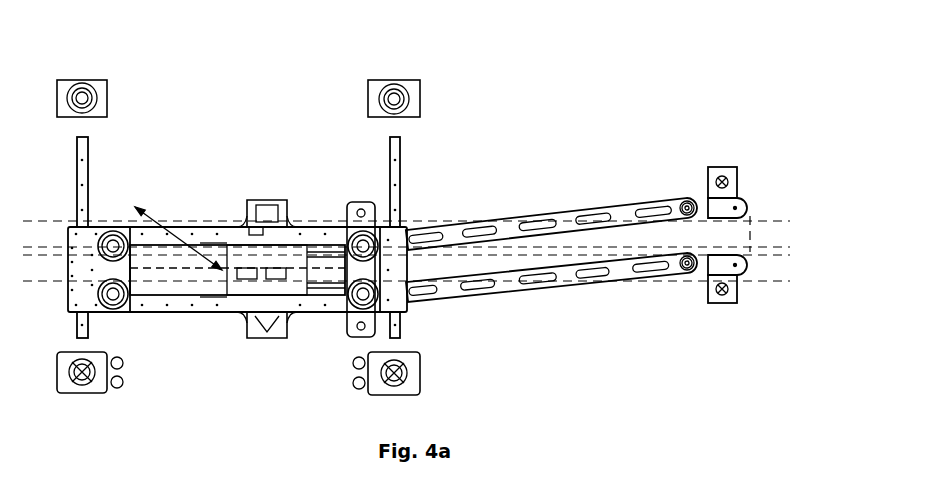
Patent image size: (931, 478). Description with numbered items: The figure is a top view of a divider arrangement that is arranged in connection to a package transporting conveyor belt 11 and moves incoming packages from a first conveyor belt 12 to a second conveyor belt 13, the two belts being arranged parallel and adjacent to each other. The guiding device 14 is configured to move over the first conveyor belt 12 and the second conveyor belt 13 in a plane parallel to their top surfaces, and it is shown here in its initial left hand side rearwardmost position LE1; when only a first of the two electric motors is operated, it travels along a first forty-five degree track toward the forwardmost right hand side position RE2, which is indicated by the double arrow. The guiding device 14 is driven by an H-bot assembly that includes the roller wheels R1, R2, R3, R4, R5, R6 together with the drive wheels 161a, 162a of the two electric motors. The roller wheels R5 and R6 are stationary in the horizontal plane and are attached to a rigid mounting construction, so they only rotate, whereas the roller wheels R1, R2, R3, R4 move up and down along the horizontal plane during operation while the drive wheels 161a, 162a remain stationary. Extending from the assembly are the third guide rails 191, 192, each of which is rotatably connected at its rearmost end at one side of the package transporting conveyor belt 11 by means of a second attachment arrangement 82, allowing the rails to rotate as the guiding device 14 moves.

The roller wheel R1 is at (108, 310).
The roller wheel R2 is at (97, 225).
The roller wheel R3 is at (385, 306).
The roller wheel R4 is at (400, 206).
The roller wheel R5 is at (82, 80).
The roller wheel R6 is at (420, 84).
The forwardmost right hand side position RE2 is at (135, 200).
The left hand side rearwardmost position LE1 is at (222, 245).
The package transporting conveyor belt 11 is at (770, 235).
The first conveyor belt 12 is at (620, 237).
The second conveyor belt 13 is at (463, 263).
The guiding device 14 is at (267, 342).
The second attachment arrangement 82 is at (672, 255).
The drive wheel 161a is at (118, 383).
The drive wheel 162a is at (421, 374).
The third guide rail 191 is at (555, 213).
The third guide rail 192 is at (563, 267).